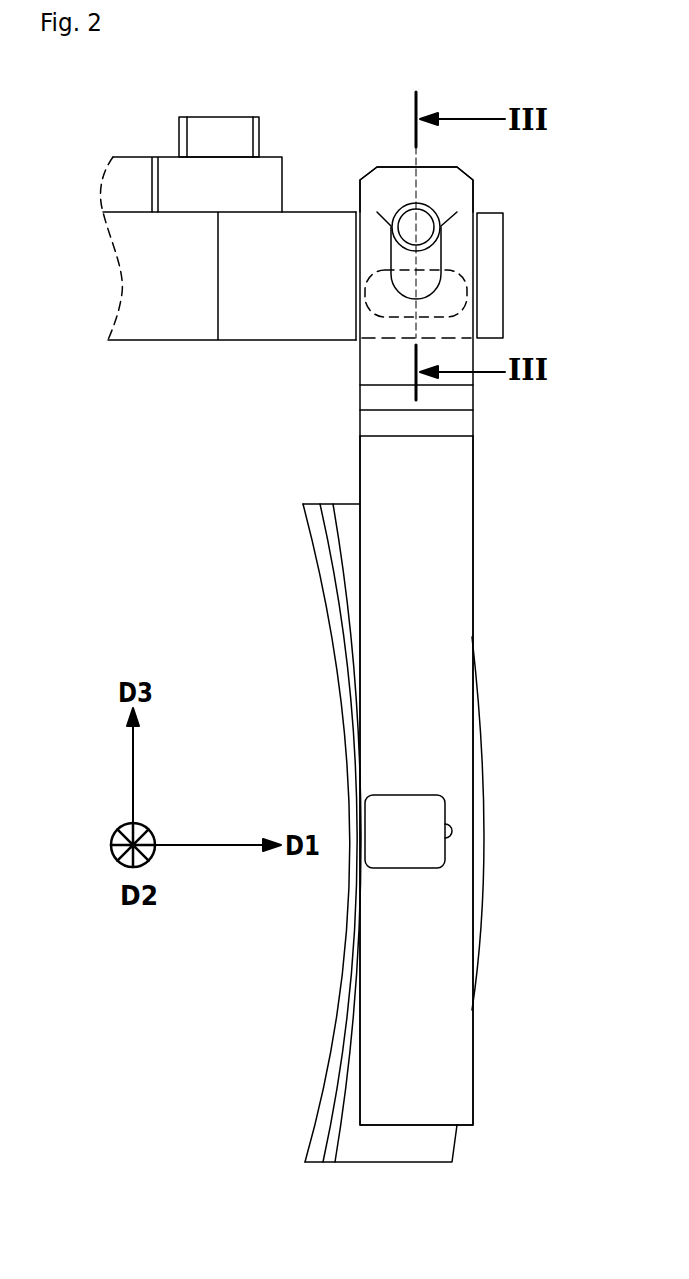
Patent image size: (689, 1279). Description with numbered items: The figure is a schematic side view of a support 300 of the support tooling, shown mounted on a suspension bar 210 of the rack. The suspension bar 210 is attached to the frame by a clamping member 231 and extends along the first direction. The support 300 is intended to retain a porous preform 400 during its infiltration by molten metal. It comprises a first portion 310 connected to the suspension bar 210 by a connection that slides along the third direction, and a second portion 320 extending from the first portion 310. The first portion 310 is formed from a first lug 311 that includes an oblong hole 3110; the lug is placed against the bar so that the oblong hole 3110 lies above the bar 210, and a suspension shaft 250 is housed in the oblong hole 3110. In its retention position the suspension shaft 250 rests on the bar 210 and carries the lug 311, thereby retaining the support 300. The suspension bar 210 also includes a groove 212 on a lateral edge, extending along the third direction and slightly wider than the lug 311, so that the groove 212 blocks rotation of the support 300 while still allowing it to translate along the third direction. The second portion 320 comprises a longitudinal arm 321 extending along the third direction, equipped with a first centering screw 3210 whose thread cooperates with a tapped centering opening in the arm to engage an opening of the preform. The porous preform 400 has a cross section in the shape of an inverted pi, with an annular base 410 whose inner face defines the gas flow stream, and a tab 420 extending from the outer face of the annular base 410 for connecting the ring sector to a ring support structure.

The suspension bar 210 is at (308, 223).
The clamping member 231 is at (222, 128).
The groove 212 is at (356, 251).
The suspension shaft 250 is at (436, 215).
The support 300 is at (276, 481).
The first portion 310 is at (534, 334).
The first lug 311 is at (390, 180).
The oblong hole 3110 is at (365, 281).
The second portion 320 is at (478, 579).
The longitudinal arm 321 is at (448, 1023).
The first centering screw 3210 is at (422, 829).
The porous preform 400 is at (335, 859).
The annular base 410 is at (340, 1027).
The tab 420 is at (392, 1145).